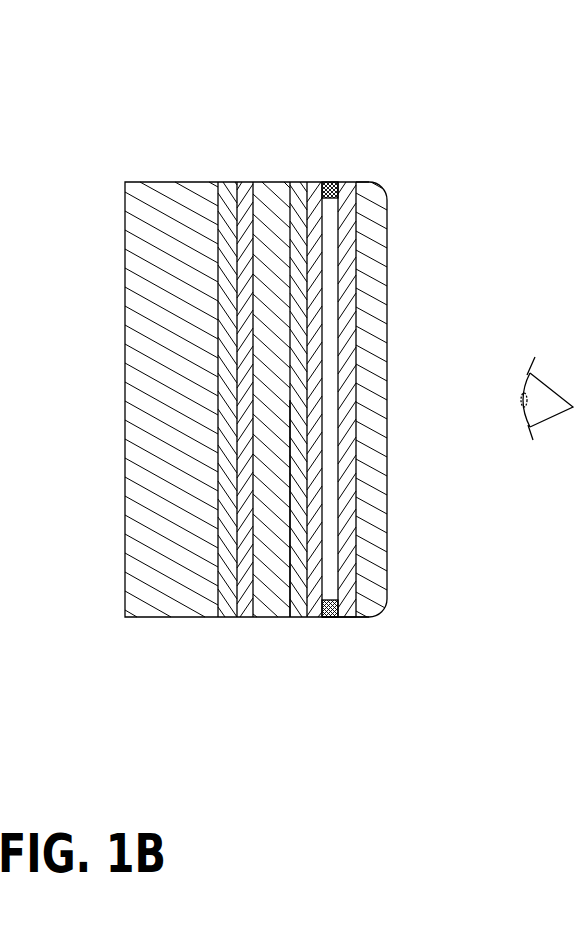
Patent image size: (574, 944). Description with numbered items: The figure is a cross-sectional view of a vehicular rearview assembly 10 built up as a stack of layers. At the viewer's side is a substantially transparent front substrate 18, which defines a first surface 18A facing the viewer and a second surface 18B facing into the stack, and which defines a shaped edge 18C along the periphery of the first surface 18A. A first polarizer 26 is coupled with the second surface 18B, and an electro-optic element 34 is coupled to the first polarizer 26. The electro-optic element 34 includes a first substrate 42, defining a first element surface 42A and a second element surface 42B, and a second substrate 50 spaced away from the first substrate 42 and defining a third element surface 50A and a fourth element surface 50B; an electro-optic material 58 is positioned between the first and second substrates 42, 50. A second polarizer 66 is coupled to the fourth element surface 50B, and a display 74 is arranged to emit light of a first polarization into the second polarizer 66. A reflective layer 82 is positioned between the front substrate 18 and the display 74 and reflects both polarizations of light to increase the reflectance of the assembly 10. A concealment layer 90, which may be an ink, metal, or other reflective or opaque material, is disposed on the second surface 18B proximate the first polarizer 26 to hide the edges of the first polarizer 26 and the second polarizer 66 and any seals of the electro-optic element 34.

The vehicular rearview assembly 10 is at (411, 92).
The display 74 is at (156, 170).
The second polarizer 66 is at (230, 193).
The second substrate 50 is at (195, 473).
The third element surface 50A is at (256, 577).
The fourth element surface 50B is at (222, 577).
The electro-optic element 34 is at (284, 399).
The electro-optic material 58 is at (272, 577).
The first substrate 42 is at (336, 472).
The first element surface 42A is at (312, 577).
The second element surface 42B is at (287, 577).
The first polarizer 26 is at (313, 182).
The concealment layer 90 is at (333, 182).
The reflective layer 82 is at (350, 618).
The front substrate 18 is at (412, 390).
The first surface 18A is at (387, 337).
The second surface 18B is at (350, 495).
The shaped edge 18C is at (372, 182).